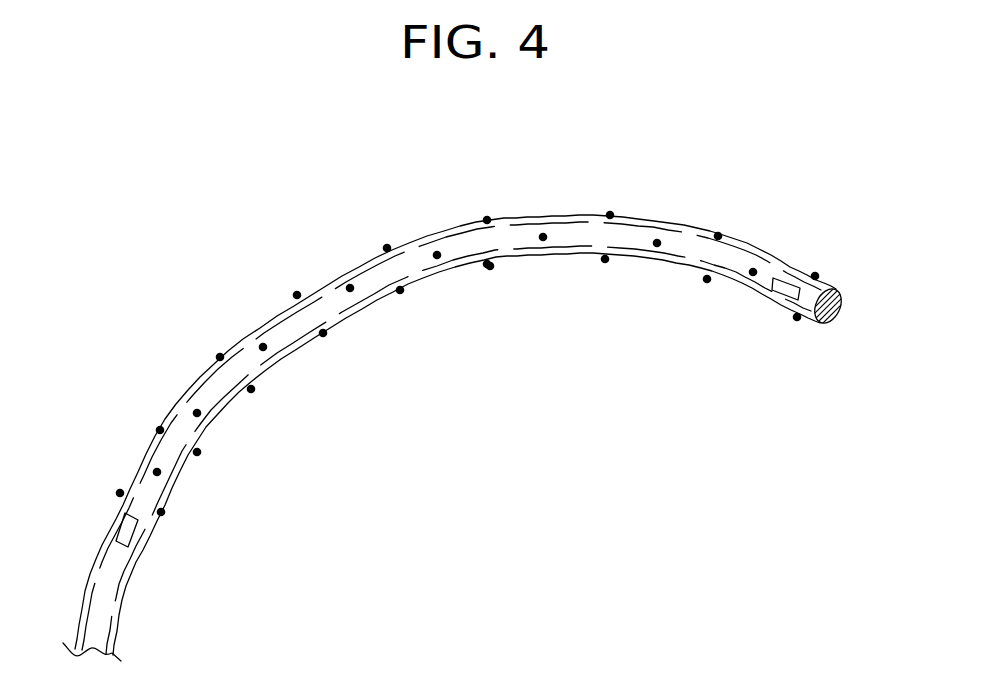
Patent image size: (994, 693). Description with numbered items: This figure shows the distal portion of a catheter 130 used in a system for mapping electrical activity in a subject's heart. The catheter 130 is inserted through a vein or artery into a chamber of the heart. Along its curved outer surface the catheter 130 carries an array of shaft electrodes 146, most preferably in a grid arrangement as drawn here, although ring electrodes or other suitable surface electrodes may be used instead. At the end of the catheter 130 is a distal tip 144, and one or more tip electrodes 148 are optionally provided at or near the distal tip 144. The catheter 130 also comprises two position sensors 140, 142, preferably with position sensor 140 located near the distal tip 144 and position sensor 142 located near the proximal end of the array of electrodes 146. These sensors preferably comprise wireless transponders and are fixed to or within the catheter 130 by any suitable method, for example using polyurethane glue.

The catheter 130 is at (376, 275).
The position sensor 140 is at (783, 288).
The position sensor 142 is at (132, 530).
The distal tip 144 is at (838, 317).
The shaft electrodes 146 is at (157, 470).
The tip electrode 148 is at (826, 326).